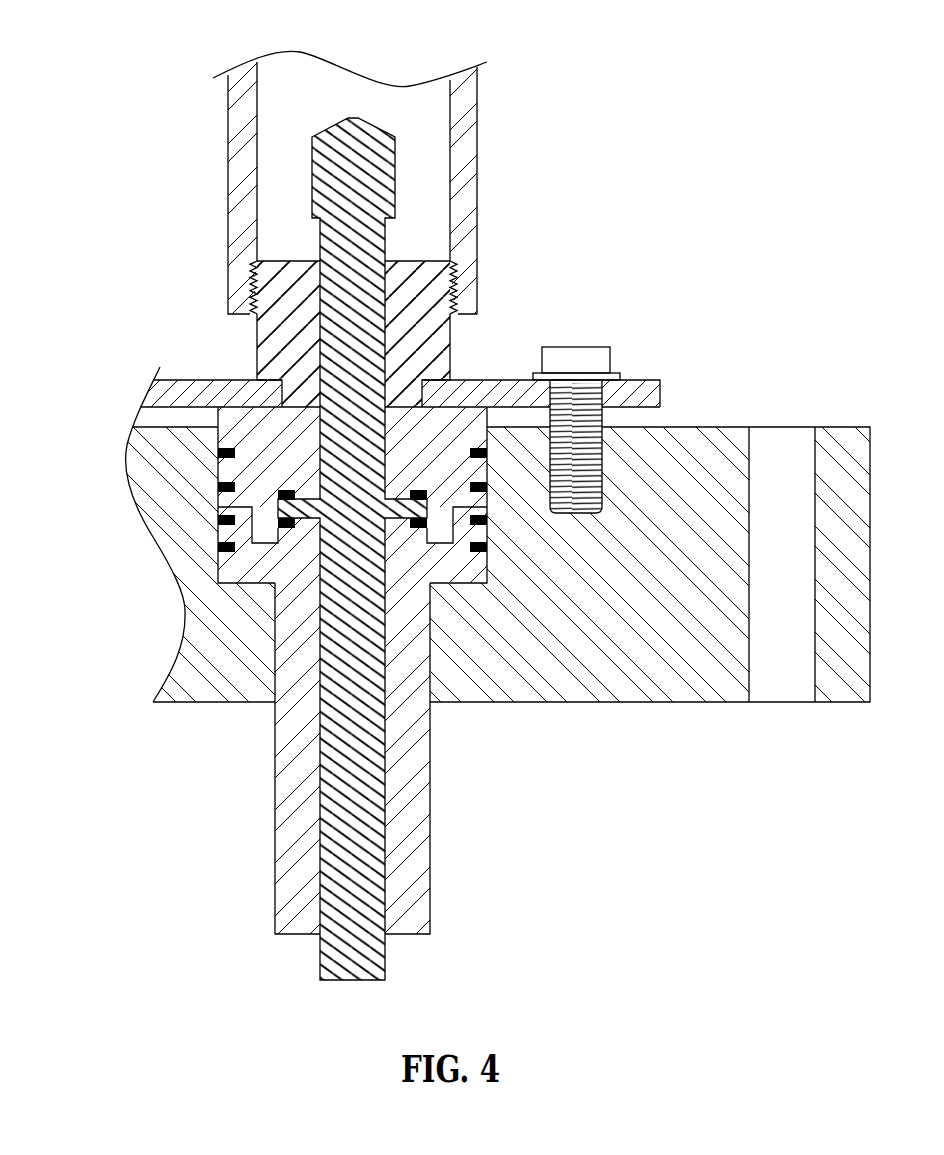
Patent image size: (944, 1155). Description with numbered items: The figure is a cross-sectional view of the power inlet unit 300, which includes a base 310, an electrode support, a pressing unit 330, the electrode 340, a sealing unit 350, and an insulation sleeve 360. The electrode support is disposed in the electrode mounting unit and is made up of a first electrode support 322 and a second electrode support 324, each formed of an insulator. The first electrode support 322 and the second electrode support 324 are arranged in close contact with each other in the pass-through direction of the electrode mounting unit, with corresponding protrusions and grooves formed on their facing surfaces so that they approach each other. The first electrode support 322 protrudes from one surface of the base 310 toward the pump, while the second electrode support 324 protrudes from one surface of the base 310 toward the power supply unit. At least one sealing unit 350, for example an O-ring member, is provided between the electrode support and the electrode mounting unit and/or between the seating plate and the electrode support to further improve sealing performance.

The power inlet unit 300 is at (811, 33).
The base 310 is at (628, 690).
The first electrode support 322 is at (430, 843).
The second electrode support 324 is at (217, 475).
The pressing unit 330 is at (505, 380).
The electrode 340 is at (312, 963).
The sealing unit 350 is at (215, 582).
The insulation sleeve 360 is at (477, 182).